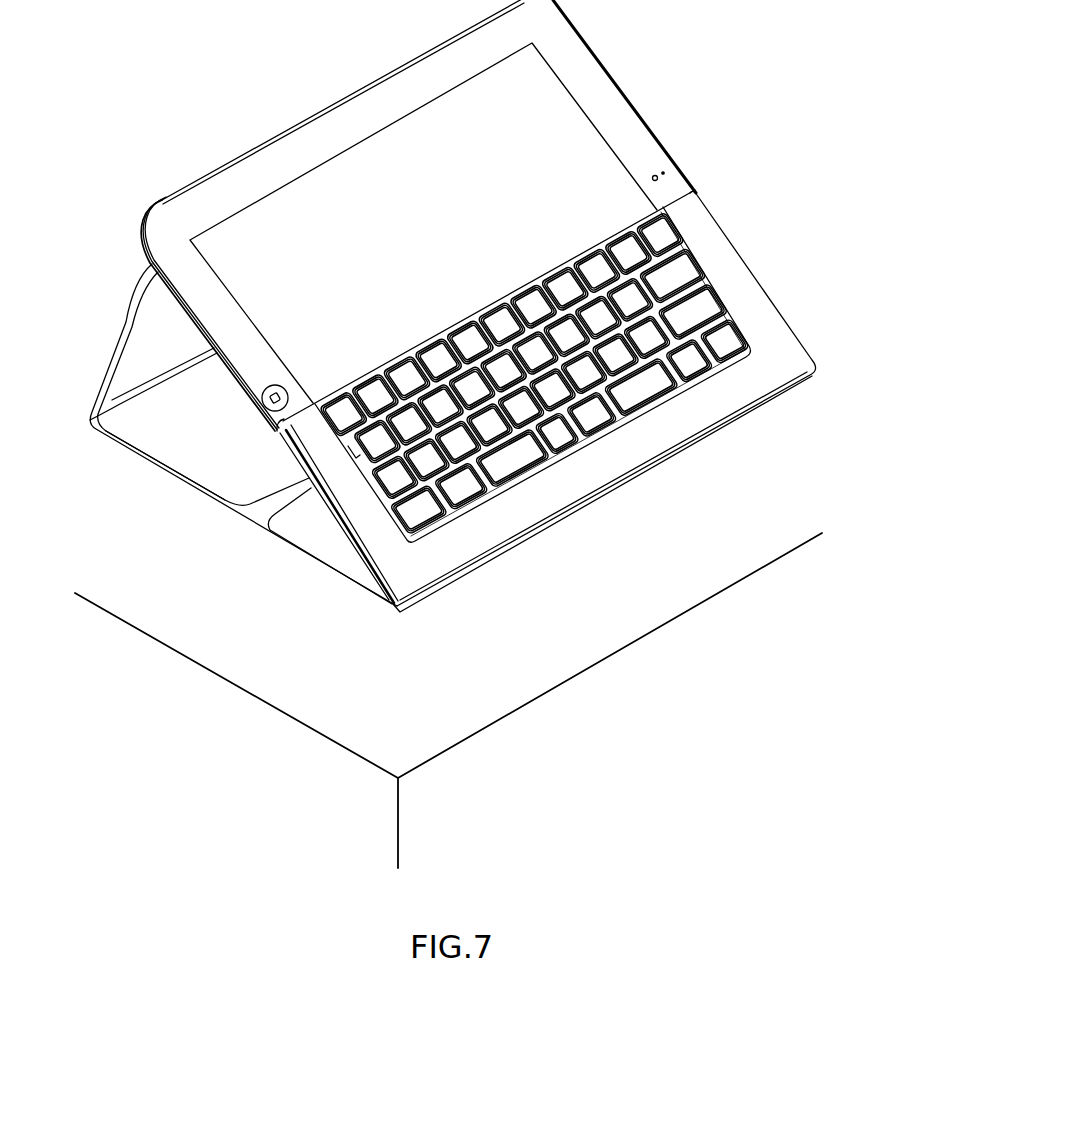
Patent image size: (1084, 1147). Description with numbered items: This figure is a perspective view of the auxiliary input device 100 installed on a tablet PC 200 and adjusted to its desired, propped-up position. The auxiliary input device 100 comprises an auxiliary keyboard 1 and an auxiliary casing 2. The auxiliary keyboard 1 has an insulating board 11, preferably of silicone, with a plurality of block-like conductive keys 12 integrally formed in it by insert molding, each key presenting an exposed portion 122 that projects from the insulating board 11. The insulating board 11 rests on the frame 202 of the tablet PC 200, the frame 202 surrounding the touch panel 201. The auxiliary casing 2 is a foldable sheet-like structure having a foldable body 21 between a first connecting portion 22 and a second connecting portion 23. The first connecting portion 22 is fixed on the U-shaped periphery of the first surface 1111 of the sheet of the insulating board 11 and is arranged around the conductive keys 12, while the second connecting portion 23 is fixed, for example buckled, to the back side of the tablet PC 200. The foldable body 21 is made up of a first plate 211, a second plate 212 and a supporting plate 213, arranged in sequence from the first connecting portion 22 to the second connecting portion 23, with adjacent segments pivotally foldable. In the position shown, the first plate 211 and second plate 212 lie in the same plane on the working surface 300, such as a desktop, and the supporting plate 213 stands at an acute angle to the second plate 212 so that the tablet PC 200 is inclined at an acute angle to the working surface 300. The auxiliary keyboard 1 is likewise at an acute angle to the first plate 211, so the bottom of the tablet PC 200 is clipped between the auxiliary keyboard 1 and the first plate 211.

The auxiliary keyboard 1 is at (529, 370).
The insulating board 11 is at (354, 325).
The first surface 1111 is at (340, 395).
The conductive keys 12 is at (501, 324).
The exposed portion 122 is at (501, 325).
The auxiliary casing 2 is at (451, 348).
The foldable body 21 is at (243, 435).
The first plate 211 is at (323, 546).
The second plate 212 is at (210, 470).
The supporting plate 213 is at (147, 358).
The first connecting portion 22 is at (402, 565).
The second connecting portion 23 is at (129, 151).
The auxiliary input device 100 is at (750, 270).
The tablet PC 200 is at (447, 215).
The touch panel 201 is at (537, 110).
The frame 202 is at (606, 110).
The working surface 300 is at (293, 690).